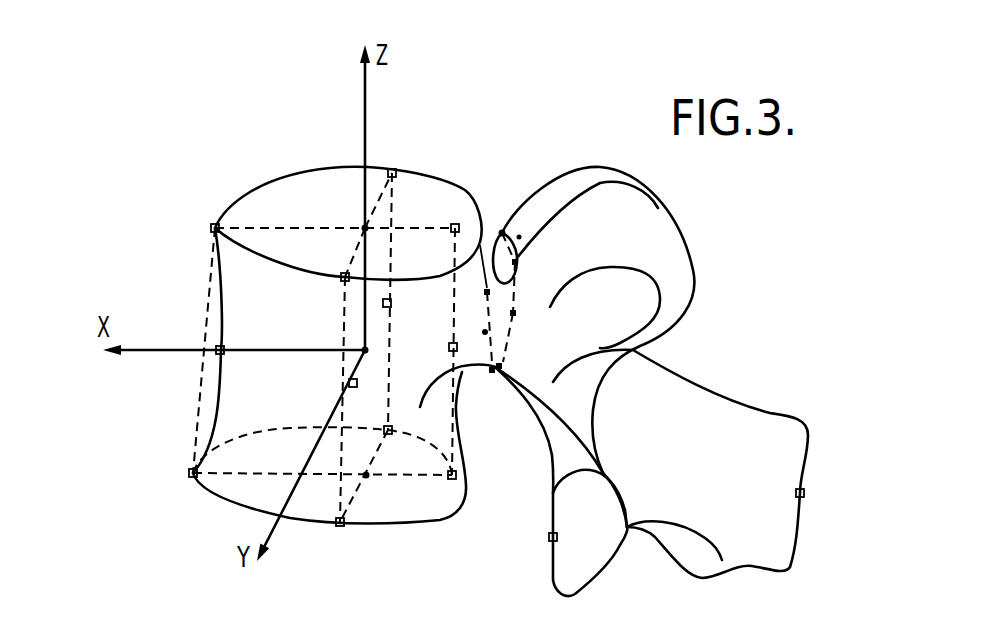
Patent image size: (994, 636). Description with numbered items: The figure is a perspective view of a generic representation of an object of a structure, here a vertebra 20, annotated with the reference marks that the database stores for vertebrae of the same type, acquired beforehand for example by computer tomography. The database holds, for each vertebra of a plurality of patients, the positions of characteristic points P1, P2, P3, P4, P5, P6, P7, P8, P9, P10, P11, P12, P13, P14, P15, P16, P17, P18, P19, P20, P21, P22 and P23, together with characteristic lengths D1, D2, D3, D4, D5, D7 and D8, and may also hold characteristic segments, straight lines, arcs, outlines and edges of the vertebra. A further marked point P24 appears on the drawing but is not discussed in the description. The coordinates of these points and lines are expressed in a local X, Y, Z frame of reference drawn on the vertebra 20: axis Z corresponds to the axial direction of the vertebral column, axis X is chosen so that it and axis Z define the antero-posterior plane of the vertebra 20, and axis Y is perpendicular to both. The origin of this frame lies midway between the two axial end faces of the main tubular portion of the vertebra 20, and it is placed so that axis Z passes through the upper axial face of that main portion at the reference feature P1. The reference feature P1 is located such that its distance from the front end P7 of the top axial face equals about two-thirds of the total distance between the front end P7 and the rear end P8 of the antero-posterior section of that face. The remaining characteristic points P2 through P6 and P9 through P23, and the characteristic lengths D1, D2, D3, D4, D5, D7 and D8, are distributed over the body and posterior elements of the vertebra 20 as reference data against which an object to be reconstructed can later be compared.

The vertebra 20 is at (212, 185).
The reference feature P1 is at (363, 225).
The characteristic point P2 is at (367, 478).
The characteristic point P3 is at (516, 259).
The characteristic point P4 is at (491, 373).
The characteristic point P5 is at (501, 230).
The characteristic point P6 is at (500, 370).
The front end P7 is at (211, 225).
The rear end P8 is at (456, 223).
The characteristic point P9 is at (189, 472).
The characteristic point P10 is at (452, 479).
The characteristic point P11 is at (216, 352).
The characteristic point P12 is at (449, 347).
The characteristic point P13 is at (803, 496).
The characteristic point P14 is at (341, 277).
The characteristic point P15 is at (395, 170).
The characteristic point P16 is at (340, 526).
The characteristic point P17 is at (392, 432).
The characteristic point P18 is at (349, 384).
The characteristic point P19 is at (383, 304).
The characteristic point P20 is at (483, 330).
The characteristic point P21 is at (516, 314).
The characteristic point P22 is at (490, 291).
The characteristic point P23 is at (519, 237).
The reference point P24 is at (551, 540).
The characteristic length D1 is at (193, 350).
The characteristic length D2 is at (335, 357).
The characteristic length D3 is at (345, 252).
The characteristic length D4 is at (337, 380).
The characteristic length D5 is at (322, 460).
The characteristic length D7 is at (360, 399).
The characteristic length D8 is at (410, 324).